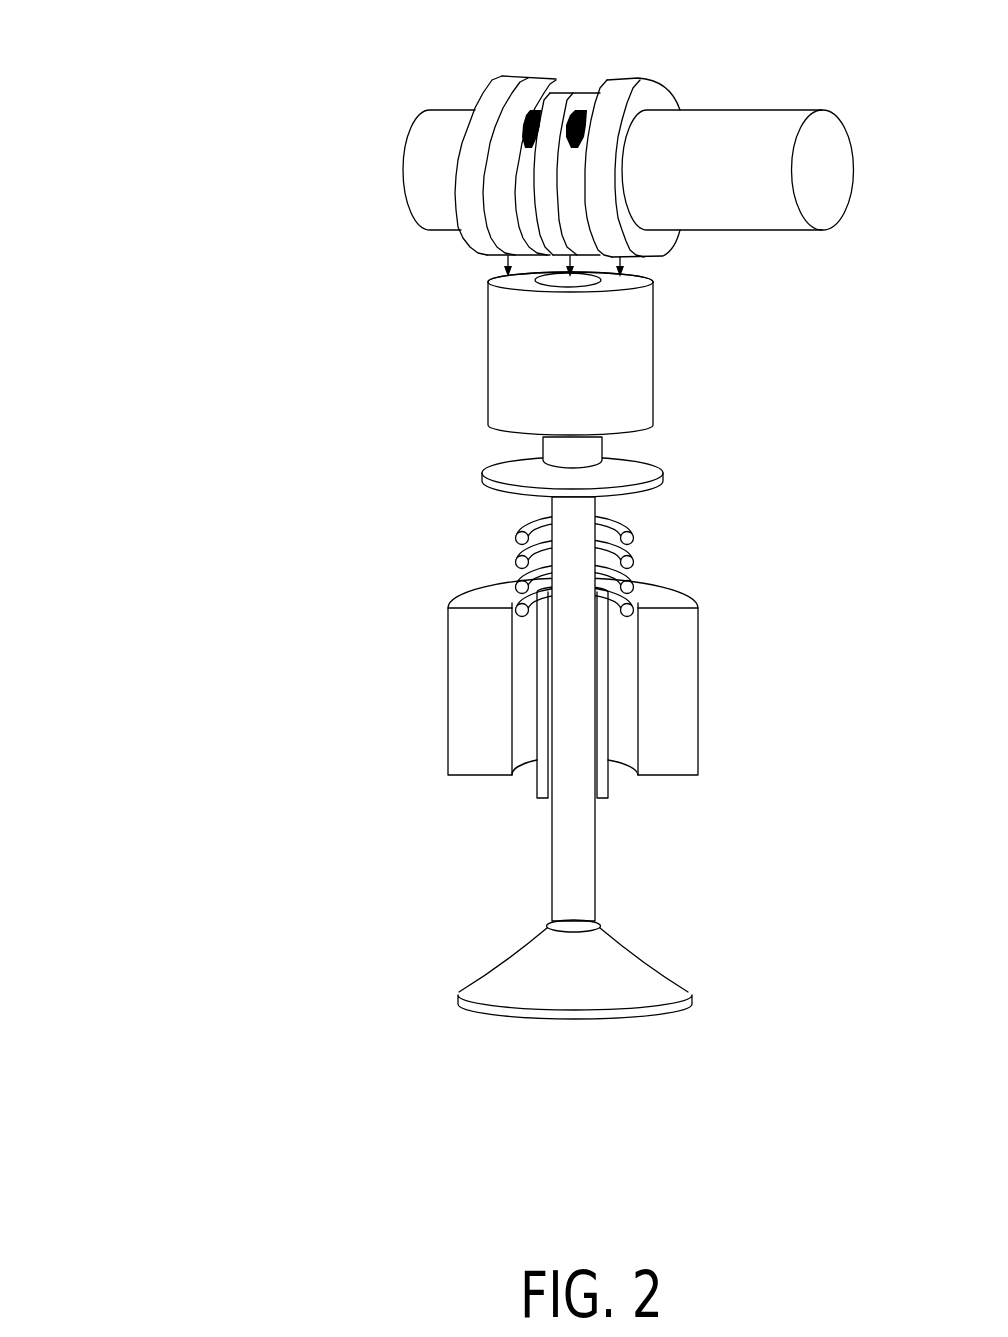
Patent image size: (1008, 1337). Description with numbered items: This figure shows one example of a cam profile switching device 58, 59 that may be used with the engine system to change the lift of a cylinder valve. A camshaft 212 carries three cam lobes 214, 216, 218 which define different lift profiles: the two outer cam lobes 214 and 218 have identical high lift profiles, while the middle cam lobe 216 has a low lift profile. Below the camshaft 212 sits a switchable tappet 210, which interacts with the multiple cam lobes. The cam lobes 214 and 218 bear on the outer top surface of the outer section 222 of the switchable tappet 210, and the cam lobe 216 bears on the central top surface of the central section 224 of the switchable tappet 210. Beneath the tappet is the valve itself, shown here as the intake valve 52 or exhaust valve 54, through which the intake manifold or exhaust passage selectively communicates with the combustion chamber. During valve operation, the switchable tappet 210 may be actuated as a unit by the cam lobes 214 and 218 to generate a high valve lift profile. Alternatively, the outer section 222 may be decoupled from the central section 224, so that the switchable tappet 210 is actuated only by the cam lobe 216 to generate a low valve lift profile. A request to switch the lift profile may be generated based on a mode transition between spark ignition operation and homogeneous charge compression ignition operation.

The cam profile switching device 58 is at (457, 513).
The cam profile switching device 59 is at (206, 127).
The camshaft 212 is at (777, 108).
The cam lobe 214 is at (528, 78).
The cam lobe 216 is at (563, 90).
The cam lobe 218 is at (642, 80).
The switchable tappet 210 is at (560, 349).
The outer section 222 is at (503, 283).
The central section 224 is at (647, 283).
The intake valve 52 is at (591, 758).
The exhaust valve 54 is at (597, 871).